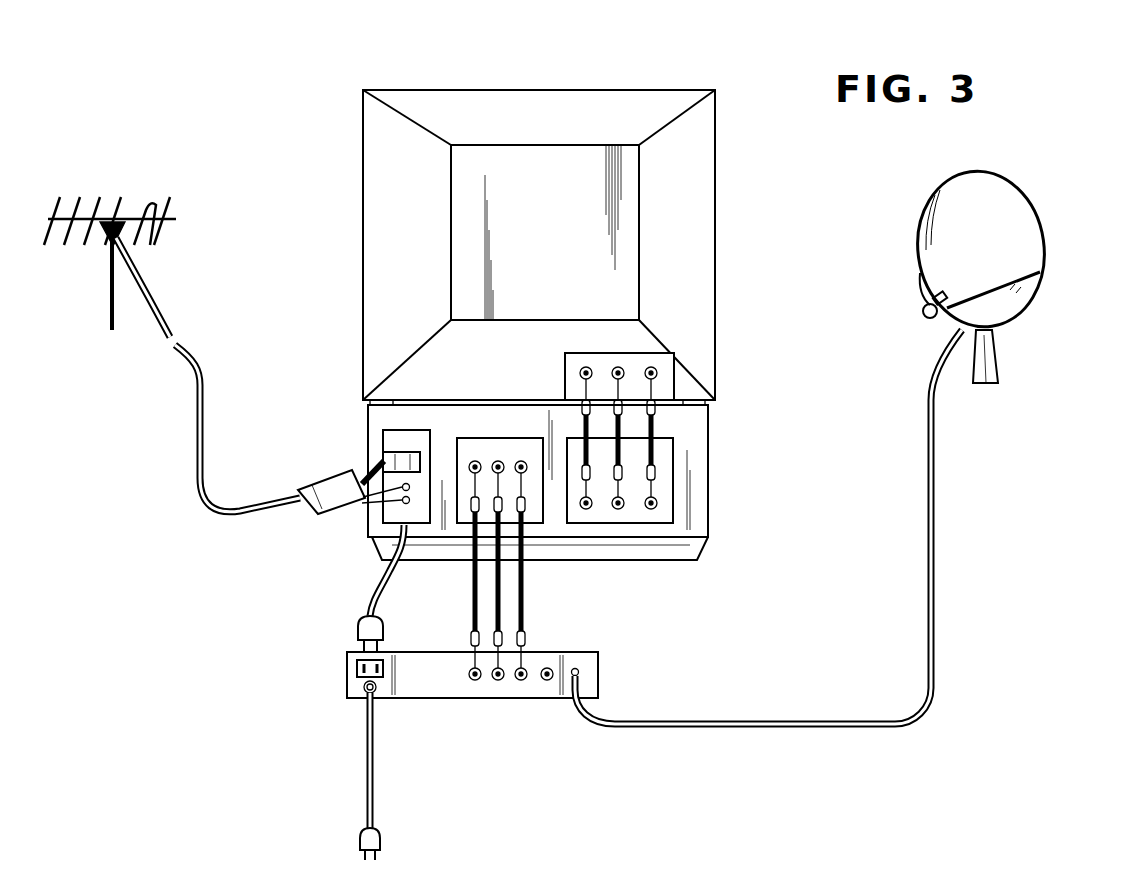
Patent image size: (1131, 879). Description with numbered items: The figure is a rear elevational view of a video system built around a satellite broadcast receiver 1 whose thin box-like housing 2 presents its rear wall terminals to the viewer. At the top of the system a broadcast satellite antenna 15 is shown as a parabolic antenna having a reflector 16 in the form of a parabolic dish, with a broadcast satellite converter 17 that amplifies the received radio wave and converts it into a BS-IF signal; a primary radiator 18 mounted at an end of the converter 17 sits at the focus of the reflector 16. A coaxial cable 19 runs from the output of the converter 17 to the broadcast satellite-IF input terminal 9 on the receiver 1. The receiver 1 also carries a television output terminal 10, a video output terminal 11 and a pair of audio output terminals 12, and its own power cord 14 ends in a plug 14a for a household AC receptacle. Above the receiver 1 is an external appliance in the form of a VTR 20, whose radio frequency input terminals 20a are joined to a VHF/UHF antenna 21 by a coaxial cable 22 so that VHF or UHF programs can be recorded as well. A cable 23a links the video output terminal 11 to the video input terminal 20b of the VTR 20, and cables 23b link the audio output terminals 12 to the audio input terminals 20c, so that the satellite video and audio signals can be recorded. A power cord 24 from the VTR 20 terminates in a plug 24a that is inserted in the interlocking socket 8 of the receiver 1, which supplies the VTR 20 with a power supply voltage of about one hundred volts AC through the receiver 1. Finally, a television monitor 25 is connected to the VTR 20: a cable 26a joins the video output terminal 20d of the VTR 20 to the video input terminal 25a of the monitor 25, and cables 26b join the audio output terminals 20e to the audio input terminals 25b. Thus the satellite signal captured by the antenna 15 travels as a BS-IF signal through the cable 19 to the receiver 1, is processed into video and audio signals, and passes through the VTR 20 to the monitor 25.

The satellite broadcast receiver 1 is at (467, 735).
The housing 2 is at (347, 688).
The interlocking socket 8 is at (357, 668).
The broadcast satellite-IF input terminal 9 is at (575, 665).
The television output terminal 10 is at (548, 665).
The video output terminal 11 is at (475, 681).
The audio output terminals 12 is at (498, 681).
The power cord 14 is at (377, 757).
The plug 14a is at (380, 845).
The broadcast satellite antenna 15 is at (1030, 193).
The reflector 16 is at (1027, 253).
The broadcast satellite converter 17 is at (925, 306).
The primary radiator 18 is at (945, 296).
The coaxial cable 19 is at (927, 540).
The VTR 20 is at (715, 468).
The radio frequency input terminals 20a is at (383, 457).
The video input terminal 20b is at (475, 462).
The audio input terminals 20c is at (521, 461).
The video output terminal 20d is at (587, 508).
The audio output terminals 20e is at (624, 497).
The VHF/UHF antenna 21 is at (113, 203).
The coaxial cable 22 is at (207, 390).
The cable 23a is at (473, 616).
The cables 23b is at (517, 586).
The power cord 24 is at (388, 583).
The plug 24a is at (357, 626).
The television monitor 25 is at (712, 247).
The video input terminal 25a is at (583, 368).
The audio input terminals 25b is at (651, 368).
The cable 26a is at (583, 415).
The cables 26b is at (657, 443).